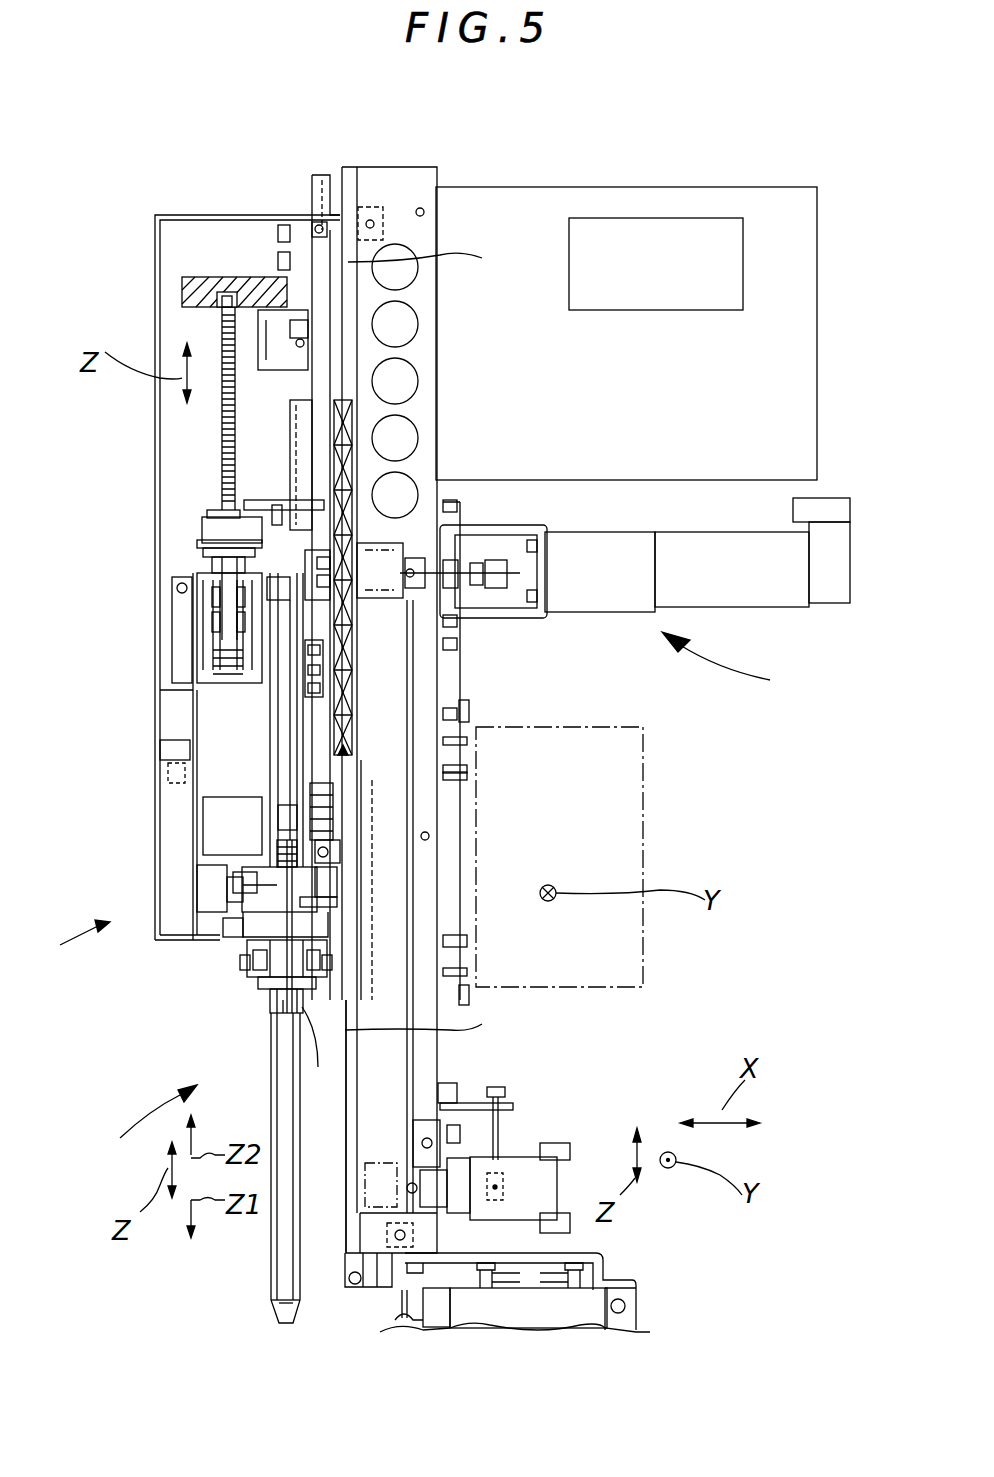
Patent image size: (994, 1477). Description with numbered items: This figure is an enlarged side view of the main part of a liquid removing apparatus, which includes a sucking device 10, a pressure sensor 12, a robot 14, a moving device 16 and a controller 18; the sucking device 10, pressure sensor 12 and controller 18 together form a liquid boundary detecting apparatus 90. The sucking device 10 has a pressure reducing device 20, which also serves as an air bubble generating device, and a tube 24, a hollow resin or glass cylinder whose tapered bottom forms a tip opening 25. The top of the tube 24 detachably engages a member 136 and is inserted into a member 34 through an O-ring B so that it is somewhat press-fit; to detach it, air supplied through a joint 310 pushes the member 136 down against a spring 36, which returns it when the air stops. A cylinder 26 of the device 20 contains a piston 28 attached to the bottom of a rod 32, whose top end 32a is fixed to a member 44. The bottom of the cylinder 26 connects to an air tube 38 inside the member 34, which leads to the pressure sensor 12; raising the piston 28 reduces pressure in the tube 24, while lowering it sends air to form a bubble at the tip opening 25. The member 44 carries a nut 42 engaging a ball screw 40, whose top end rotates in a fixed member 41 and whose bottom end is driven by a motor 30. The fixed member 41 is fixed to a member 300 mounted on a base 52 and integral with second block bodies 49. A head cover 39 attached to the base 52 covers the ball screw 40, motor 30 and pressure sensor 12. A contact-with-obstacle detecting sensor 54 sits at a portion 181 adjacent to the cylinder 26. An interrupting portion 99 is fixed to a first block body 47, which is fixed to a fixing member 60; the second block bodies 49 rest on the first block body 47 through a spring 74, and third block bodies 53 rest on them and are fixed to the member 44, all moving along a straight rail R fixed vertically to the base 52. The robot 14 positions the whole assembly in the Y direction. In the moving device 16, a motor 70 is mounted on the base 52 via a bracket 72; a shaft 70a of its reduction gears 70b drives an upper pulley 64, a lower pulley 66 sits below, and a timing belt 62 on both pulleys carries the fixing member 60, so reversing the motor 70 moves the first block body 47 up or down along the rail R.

The sucking device 10 is at (138, 1124).
The pressure sensor 12 is at (215, 927).
The robot 14 is at (643, 938).
The moving device 16 is at (732, 664).
The controller 18 is at (655, 218).
The pressure reducing device 20 is at (262, 818).
The tube 24 is at (285, 1247).
The tip opening 25 is at (285, 1323).
The cylinder 26 is at (270, 770).
The piston 28 is at (225, 858).
The motor 30 is at (210, 902).
The rod 32 is at (260, 758).
The top end of the rod 32a is at (276, 530).
The member 34 is at (262, 1005).
The spring 36 is at (250, 990).
The air tube 38 is at (275, 1015).
The head cover 39 is at (155, 300).
The ball screw 40 is at (222, 460).
The fixed member 41 is at (194, 277).
The nut 42 is at (230, 548).
The member 44 is at (290, 440).
The first block body 47 is at (440, 730).
The second block bodies 49 is at (450, 625).
The base 52 is at (437, 340).
The third block bodies 53 is at (360, 420).
The contact-with-obstacle detecting sensor 54 is at (333, 800).
The fixing member 60 is at (410, 690).
The timing belt 62 is at (375, 820).
The pulley 64 is at (445, 560).
The pulley 66 is at (447, 1130).
The motor 70 is at (697, 479).
The shaft 70a is at (558, 540).
The reduction gears 70b is at (629, 550).
The bracket 72 is at (585, 548).
The spring 74 is at (305, 670).
The liquid boundary detecting apparatus 90 is at (62, 945).
The interrupting portion 99 is at (400, 765).
The member 136 is at (400, 935).
The portion 181 is at (400, 860).
The member 300 is at (318, 290).
The joint 310 is at (250, 958).
The straight rail R is at (425, 644).
The O-ring B is at (318, 1051).